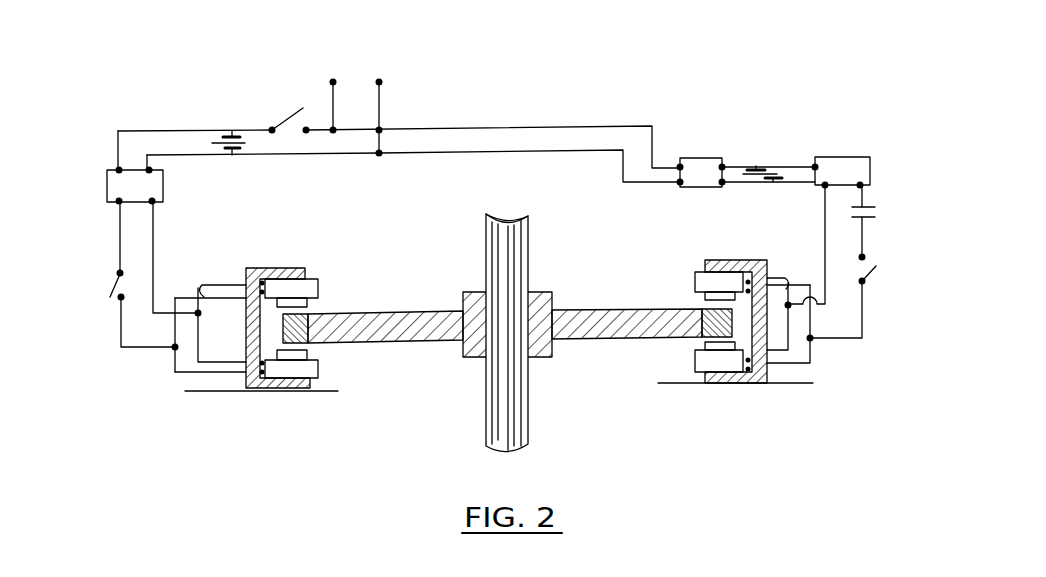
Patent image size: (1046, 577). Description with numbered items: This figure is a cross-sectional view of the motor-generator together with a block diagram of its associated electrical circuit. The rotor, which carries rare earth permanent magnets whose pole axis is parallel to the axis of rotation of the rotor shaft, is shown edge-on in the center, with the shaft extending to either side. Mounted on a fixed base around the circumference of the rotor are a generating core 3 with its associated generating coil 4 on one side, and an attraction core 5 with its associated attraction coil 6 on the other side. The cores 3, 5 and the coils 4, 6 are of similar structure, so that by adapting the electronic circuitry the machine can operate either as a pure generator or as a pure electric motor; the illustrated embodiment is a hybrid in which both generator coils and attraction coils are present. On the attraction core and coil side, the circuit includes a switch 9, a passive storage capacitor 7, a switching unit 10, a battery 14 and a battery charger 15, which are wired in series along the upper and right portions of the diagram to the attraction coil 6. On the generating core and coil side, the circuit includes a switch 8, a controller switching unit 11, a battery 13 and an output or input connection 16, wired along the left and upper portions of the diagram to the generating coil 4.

The generating core 3 is at (262, 270).
The generating coil 4 is at (322, 277).
The attraction core 5 is at (738, 260).
The attraction coil 6 is at (693, 282).
The passive storage capacitor 7 is at (872, 205).
The switch 8 is at (112, 283).
The switch 9 is at (877, 267).
The switching unit 10 is at (855, 155).
The controller switching unit 11 is at (163, 188).
The battery 13 is at (230, 137).
The battery 14 is at (768, 165).
The battery charger 15 is at (705, 158).
The output or input connection 16 is at (379, 82).